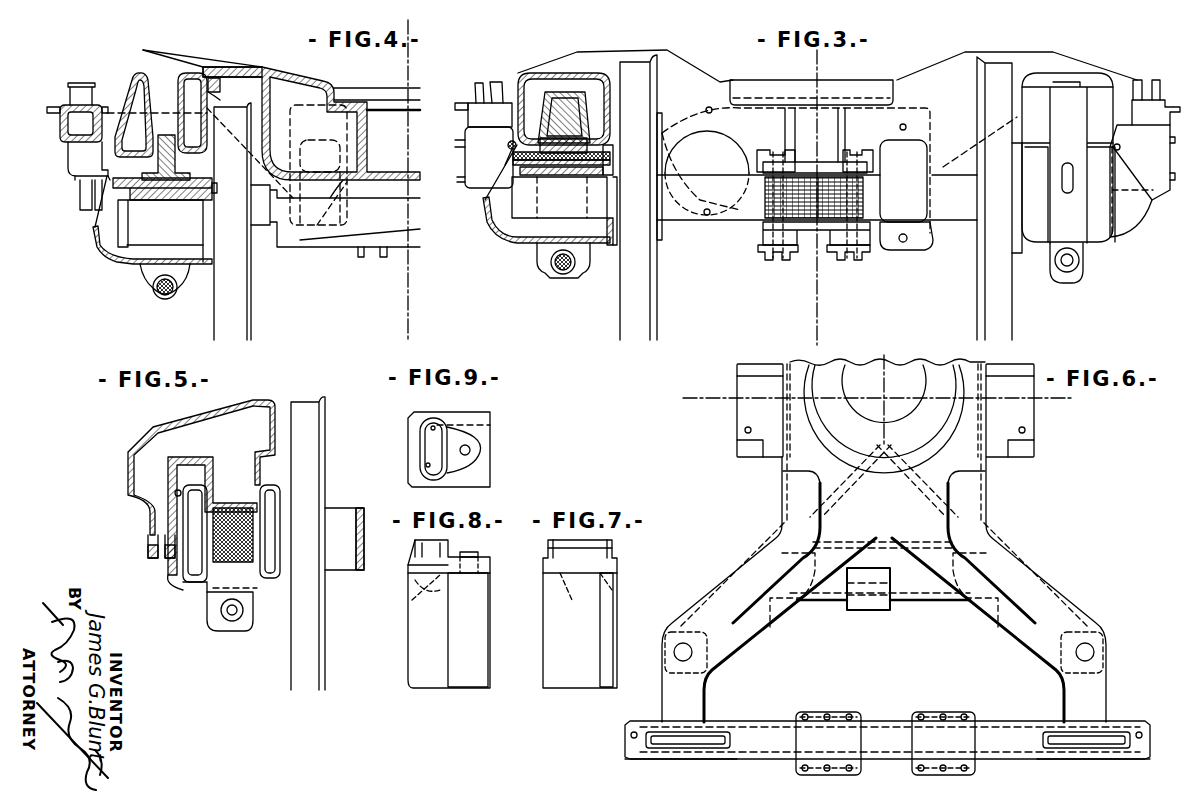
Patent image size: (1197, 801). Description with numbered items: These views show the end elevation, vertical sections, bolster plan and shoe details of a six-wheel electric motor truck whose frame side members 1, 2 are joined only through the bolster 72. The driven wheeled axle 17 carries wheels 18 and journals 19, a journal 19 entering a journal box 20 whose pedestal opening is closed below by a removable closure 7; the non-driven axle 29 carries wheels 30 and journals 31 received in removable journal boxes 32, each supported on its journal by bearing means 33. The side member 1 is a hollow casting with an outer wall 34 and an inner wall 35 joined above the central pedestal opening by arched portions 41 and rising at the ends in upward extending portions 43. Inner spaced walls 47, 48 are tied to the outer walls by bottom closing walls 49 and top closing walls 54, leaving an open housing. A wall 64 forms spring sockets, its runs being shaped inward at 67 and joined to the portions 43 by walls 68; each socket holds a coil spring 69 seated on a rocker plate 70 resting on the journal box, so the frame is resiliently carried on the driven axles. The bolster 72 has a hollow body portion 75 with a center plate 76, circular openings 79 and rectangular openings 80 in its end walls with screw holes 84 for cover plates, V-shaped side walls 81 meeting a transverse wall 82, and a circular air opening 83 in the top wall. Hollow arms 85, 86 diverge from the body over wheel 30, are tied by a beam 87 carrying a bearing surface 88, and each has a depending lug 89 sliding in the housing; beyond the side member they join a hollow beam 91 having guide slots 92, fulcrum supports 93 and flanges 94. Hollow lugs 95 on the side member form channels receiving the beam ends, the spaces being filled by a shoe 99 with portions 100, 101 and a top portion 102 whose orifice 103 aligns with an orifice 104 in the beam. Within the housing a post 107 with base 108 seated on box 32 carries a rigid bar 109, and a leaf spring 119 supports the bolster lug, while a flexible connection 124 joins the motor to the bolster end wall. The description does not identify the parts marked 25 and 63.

In FIG. 3, the frame side member 1 is at (547, 247).
In FIG. 3, the frame side member 2 is at (1085, 252).
In FIG. 3, the removable closure 7 is at (572, 270).
In FIG. 3, the driven wheeled axle 17 is at (690, 222).
In FIG. 3, the wheels 18 is at (640, 300).
In FIG. 3, the journals 19 is at (525, 207).
In FIG. 3, the journal box 20 is at (517, 242).
In FIG. 3, the wheel 25 is at (1042, 228).
In FIG. 4, the non-driven third wheeled axle 29 is at (283, 252).
In FIG. 4, the wheels 30 is at (234, 310).
In FIG. 4, the end journals 31 is at (186, 233).
In FIG. 4, the removable journal boxes 32 is at (117, 268).
In FIG. 4, the bearing means 33 is at (183, 203).
In FIG. 5, the outer wall 34 is at (210, 562).
In FIG. 5, the inner wall 35 is at (283, 570).
In FIG. 4, the curved or arched portions 41 is at (125, 92).
In FIG. 3, the upward extending wall portions 43 is at (500, 100).
In FIG. 5, the spaced wall 47 is at (185, 562).
In FIG. 5, the spaced wall 48 is at (270, 528).
In FIG. 5, the bottom closing walls 49 is at (200, 595).
In FIG. 4, the top closing walls 54 is at (182, 77).
In FIG. 5, the top closing walls 54 is at (190, 478).
In FIG. 3, the spring housing 63 is at (600, 83).
In FIG. 3, the spring housing wall 64 is at (583, 93).
In FIG. 3, the inwardly shaped run portions 67 is at (543, 103).
In FIG. 3, the connecting walls 68 is at (510, 150).
In FIG. 3, the coil spring 69 is at (583, 118).
In FIG. 3, the rocker plate 70 is at (613, 148).
In FIG. 4, the bolster 72 is at (390, 182).
In FIG. 3, the bolster 72 is at (940, 72).
In FIG. 6, the bolster 72 is at (884, 481).
In FIG. 6, the hollow body portion 75 is at (807, 485).
In FIG. 3, the center plate 76 is at (838, 66).
In FIG. 6, the center plate 76 is at (822, 383).
In FIG. 3, the circular openings 79 is at (707, 173).
In FIG. 6, the circular openings 79 is at (988, 470).
In FIG. 3, the rectangular openings 80 is at (845, 184).
In FIG. 6, the rectangular openings 80 is at (783, 468).
In FIG. 4, the side walls 81 is at (362, 146).
In FIG. 6, the side walls 81 is at (822, 508).
In FIG. 6, the transverse wall 82 is at (886, 428).
In FIG. 4, the circular opening 83 is at (386, 100).
In FIG. 6, the circular opening 83 is at (865, 418).
In FIG. 3, the screw holes 84 is at (707, 215).
In FIG. 6, the arm 85 is at (728, 587).
In FIG. 6, the arm 86 is at (1020, 575).
In FIG. 4, the hollow beam 87 is at (240, 67).
In FIG. 6, the hollow beam 87 is at (843, 600).
In FIG. 4, the bearing surface 88 is at (233, 62).
In FIG. 6, the bearing surface 88 is at (895, 612).
In FIG. 5, the hollow depending lug 89 is at (262, 478).
In FIG. 6, the hollow depending lug 89 is at (728, 668).
In FIG. 4, the hollow beam 91 is at (62, 128).
In FIG. 6, the hollow beam 91 is at (765, 760).
In FIG. 5, the guide slot 92 is at (152, 430).
In FIG. 6, the guide slot 92 is at (1085, 750).
In FIG. 4, the depending fulcrum support 93 is at (80, 198).
In FIG. 5, the depending fulcrum support 93 is at (150, 545).
In FIG. 6, the flanges 94 is at (912, 777).
In FIG. 3, the hollow lugs 95 is at (1160, 177).
In FIG. 7, the filler or shoe 99 is at (574, 632).
In FIG. 9, the shoe portion 100 is at (412, 478).
In FIG. 8, the shoe portion 100 is at (412, 650).
In FIG. 7, the shoe portion 100 is at (548, 600).
In FIG. 9, the shoe portion 101 is at (485, 420).
In FIG. 8, the shoe portion 101 is at (473, 645).
In FIG. 7, the shoe portion 101 is at (610, 600).
In FIG. 9, the top portion 102 is at (483, 477).
In FIG. 8, the top portion 102 is at (485, 567).
In FIG. 9, the vertical orifice 103 is at (470, 450).
In FIG. 8, the vertical orifice 103 is at (465, 555).
In FIG. 6, the vertical orifice 104 is at (625, 735).
In FIG. 4, the post 107 is at (127, 160).
In FIG. 4, the extended base 108 is at (188, 172).
In FIG. 4, the rigid bar 109 is at (172, 135).
In FIG. 5, the leaf spring 119 is at (205, 600).
In FIG. 6, the flexible connection 124 is at (1026, 436).